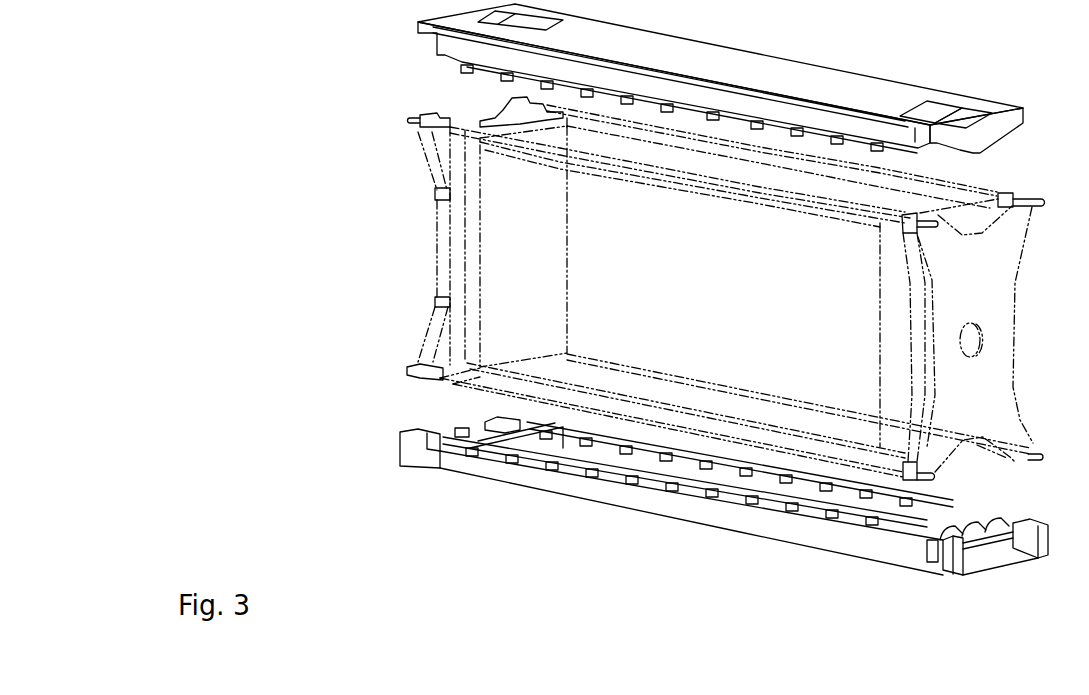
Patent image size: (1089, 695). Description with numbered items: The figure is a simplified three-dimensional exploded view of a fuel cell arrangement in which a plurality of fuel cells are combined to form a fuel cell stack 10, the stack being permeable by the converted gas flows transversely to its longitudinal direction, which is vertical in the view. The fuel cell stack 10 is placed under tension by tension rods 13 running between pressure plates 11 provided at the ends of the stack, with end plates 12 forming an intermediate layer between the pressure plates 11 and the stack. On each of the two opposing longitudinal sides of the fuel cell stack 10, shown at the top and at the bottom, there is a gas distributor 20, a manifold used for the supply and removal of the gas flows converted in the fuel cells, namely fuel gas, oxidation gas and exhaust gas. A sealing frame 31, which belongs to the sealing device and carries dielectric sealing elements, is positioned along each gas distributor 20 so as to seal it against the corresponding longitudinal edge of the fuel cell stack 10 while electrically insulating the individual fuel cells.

The fuel cell stack 10 is at (625, 288).
The pressure plate 11 is at (440, 205).
The end plate 12 is at (466, 262).
The tension rod 13 is at (618, 372).
The gas distributor 20 is at (447, 40).
The sealing frame 31 is at (487, 70).